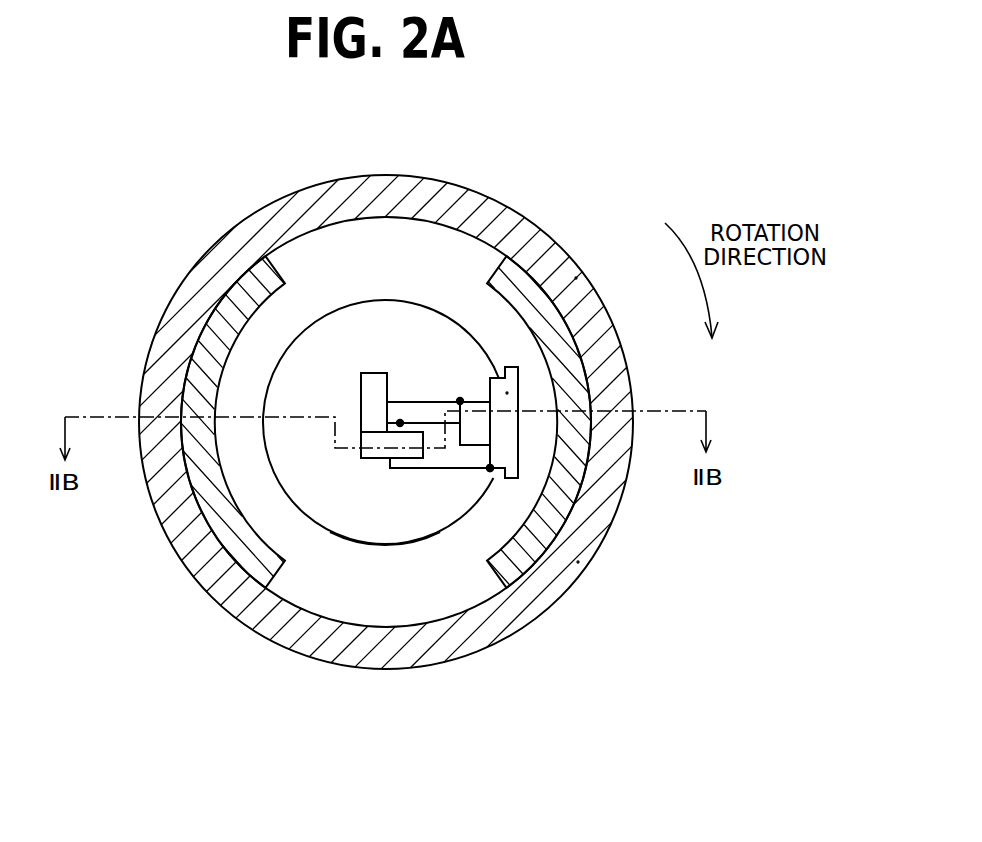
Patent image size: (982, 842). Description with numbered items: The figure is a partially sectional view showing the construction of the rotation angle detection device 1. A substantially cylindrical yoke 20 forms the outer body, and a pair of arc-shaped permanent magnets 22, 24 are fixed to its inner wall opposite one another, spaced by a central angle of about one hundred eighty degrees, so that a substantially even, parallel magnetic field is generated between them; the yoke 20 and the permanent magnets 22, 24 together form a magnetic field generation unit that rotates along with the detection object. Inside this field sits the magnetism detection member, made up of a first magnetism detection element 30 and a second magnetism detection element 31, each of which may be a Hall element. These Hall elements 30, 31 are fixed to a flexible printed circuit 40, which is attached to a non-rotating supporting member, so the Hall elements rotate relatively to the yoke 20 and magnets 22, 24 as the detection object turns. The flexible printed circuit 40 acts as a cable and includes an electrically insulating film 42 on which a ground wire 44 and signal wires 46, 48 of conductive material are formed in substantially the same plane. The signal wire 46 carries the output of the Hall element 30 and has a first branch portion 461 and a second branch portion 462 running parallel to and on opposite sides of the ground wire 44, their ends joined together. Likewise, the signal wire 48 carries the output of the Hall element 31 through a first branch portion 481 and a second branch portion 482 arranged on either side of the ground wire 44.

The rotation angle detection device 1 is at (703, 152).
The yoke 20 is at (390, 180).
The permanent magnet 22 is at (253, 278).
The permanent magnet 24 is at (510, 577).
The first magnetism detection element 30 is at (372, 373).
The second magnetism detection element 31 is at (377, 458).
The flexible printed circuit 40 is at (332, 313).
The film 42 is at (358, 532).
The ground wire 44 is at (400, 423).
The signal wire 46 is at (460, 401).
The signal wire 48 is at (433, 468).
The first branch portion 461 is at (505, 395).
The second branch portion 462 is at (490, 468).
The first branch portion 481 is at (578, 562).
The second branch portion 482 is at (576, 278).